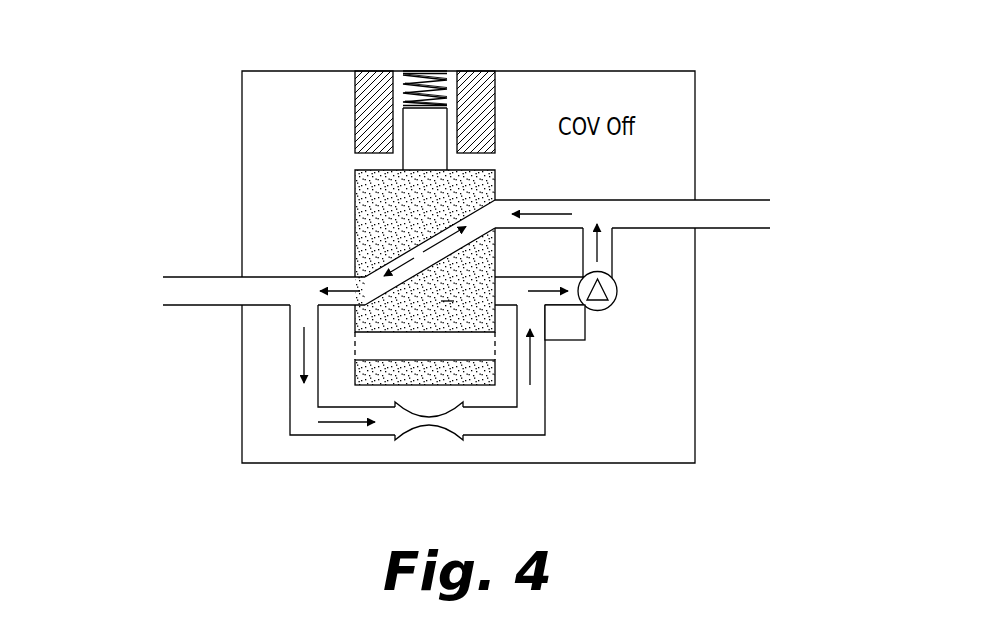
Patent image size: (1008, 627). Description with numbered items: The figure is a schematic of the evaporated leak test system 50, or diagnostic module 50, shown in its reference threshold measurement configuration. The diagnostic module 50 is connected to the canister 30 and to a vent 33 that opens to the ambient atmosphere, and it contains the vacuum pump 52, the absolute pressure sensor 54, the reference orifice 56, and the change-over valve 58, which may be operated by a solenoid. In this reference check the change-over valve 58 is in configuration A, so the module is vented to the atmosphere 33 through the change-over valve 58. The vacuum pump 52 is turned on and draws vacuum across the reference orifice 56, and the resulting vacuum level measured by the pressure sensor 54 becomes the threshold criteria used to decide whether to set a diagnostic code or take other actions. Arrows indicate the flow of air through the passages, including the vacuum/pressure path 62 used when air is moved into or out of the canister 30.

The evaporated leak test system 50 is at (558, 38).
The change-over valve 58 is at (355, 222).
The canister 30 is at (70, 304).
The vent 33 is at (845, 229).
The vacuum/pressure path 62 is at (617, 216).
The vacuum pump 52 is at (606, 287).
The absolute pressure sensor 54 is at (565, 340).
The reference orifice 56 is at (428, 426).